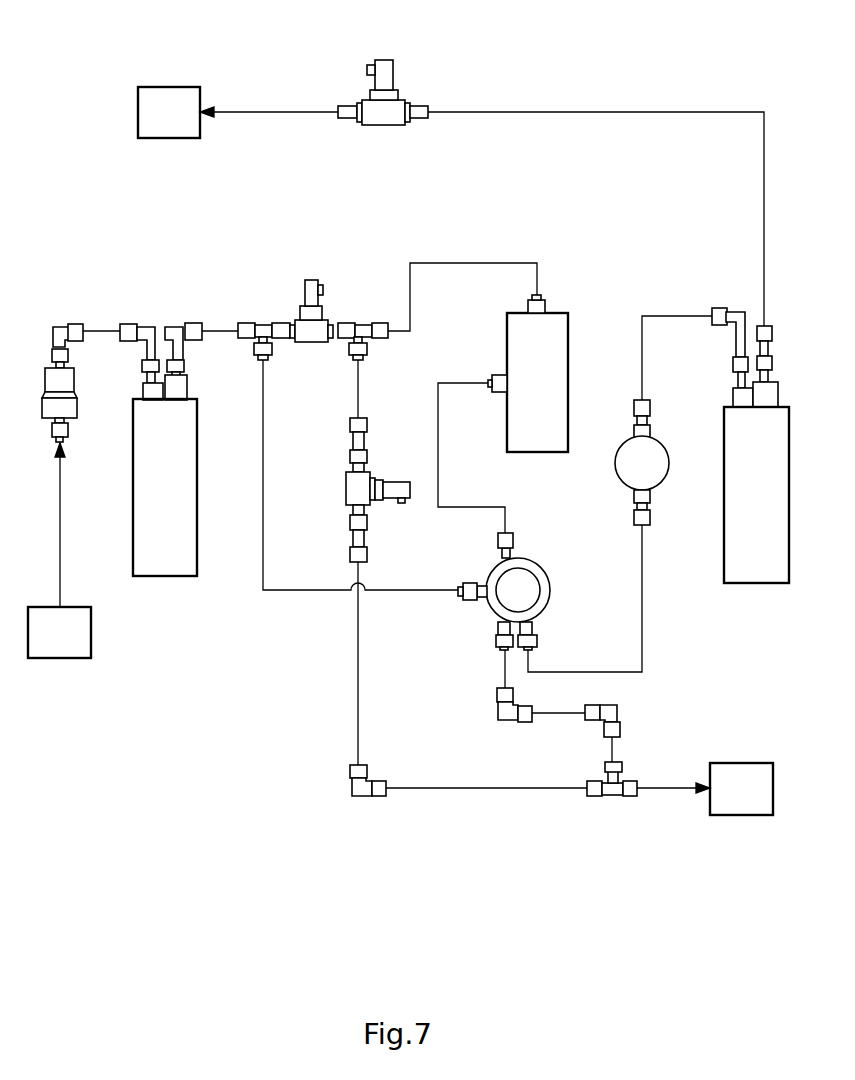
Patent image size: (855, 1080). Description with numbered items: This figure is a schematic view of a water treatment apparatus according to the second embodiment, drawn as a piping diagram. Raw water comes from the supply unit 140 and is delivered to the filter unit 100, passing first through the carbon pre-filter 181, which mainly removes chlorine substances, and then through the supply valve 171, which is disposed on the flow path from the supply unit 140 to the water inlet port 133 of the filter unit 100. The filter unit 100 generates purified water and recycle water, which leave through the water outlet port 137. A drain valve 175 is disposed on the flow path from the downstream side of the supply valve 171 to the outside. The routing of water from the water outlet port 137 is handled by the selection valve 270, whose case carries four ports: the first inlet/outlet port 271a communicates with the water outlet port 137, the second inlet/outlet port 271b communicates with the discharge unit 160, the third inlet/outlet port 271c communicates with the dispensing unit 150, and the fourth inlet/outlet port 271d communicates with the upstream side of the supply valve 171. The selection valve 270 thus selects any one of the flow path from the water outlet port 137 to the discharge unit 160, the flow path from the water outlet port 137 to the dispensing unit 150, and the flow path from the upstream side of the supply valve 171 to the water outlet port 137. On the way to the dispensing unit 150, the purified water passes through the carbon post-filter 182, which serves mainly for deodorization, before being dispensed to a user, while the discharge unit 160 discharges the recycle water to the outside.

The filter unit 100 is at (505, 313).
The water inlet port 133 is at (540, 296).
The water outlet port 137 is at (490, 387).
The supply unit 140 is at (58, 660).
The dispensing unit 150 is at (168, 87).
The discharge unit 160 is at (740, 817).
The supply valve 171 is at (313, 278).
The drain valve 175 is at (345, 495).
The carbon pre-filter 181 is at (164, 578).
The carbon post-filter 182 is at (755, 585).
The selection valve 270 is at (533, 585).
The first inlet/outlet port 271a is at (513, 535).
The second inlet/outlet port 271b is at (497, 648).
The third inlet/outlet port 271c is at (537, 648).
The fourth inlet/outlet port 271d is at (460, 597).